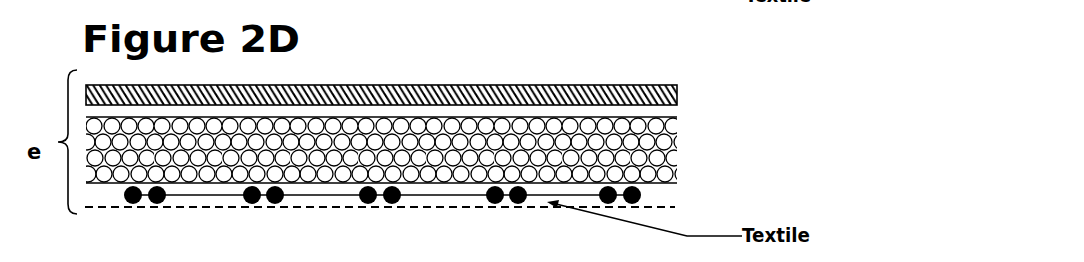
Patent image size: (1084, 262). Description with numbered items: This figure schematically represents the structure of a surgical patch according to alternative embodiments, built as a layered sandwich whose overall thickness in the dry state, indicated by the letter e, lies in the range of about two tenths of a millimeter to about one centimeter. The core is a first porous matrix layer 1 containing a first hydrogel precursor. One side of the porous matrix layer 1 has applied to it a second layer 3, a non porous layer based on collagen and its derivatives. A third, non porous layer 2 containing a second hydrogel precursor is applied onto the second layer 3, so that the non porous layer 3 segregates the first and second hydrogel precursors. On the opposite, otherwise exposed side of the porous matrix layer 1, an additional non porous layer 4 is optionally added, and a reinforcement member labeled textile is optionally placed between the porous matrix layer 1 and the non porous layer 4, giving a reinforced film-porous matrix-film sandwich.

The third non porous layer 2 is at (426, 64).
The second layer 3 is at (670, 115).
The porous matrix layer 1 is at (672, 152).
The non porous layer 4 is at (670, 192).